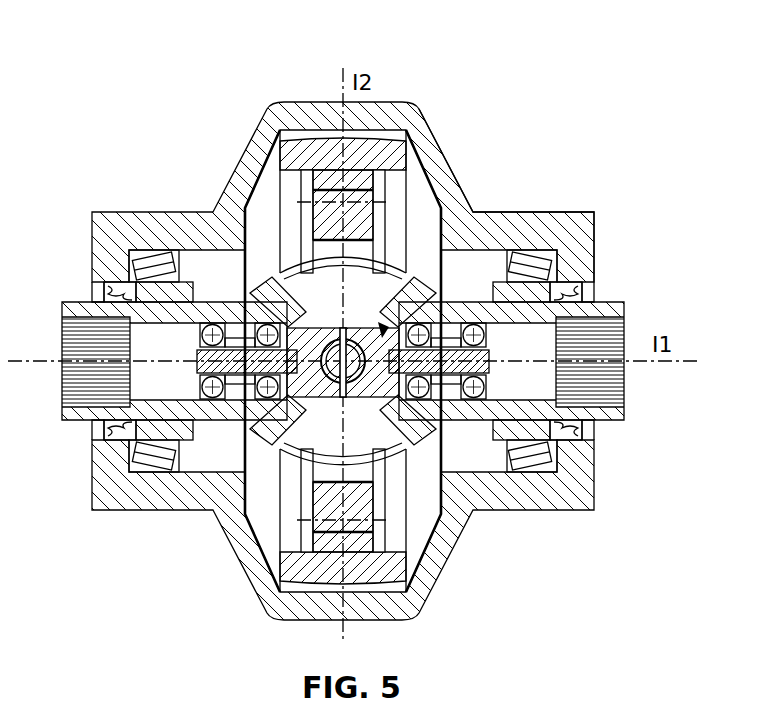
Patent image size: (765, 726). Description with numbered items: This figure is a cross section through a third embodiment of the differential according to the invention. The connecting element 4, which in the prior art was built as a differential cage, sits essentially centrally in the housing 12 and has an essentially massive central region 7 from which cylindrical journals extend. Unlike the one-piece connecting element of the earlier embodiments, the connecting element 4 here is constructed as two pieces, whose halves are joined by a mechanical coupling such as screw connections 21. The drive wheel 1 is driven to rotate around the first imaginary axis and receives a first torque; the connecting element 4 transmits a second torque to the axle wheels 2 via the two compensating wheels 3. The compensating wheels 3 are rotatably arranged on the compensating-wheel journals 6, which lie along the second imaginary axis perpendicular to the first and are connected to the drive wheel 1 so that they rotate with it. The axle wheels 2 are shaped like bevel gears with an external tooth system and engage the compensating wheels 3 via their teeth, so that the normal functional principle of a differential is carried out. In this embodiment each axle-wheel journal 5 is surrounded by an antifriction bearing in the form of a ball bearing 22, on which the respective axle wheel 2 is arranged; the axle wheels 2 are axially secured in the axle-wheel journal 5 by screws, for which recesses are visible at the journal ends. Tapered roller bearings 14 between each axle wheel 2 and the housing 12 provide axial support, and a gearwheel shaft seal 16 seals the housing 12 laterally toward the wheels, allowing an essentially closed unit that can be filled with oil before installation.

The drive wheel 1 is at (427, 115).
The housing 12 is at (466, 214).
The axle wheel 2 is at (386, 361).
The screw connection 21 is at (283, 292).
The compensating wheel 3 is at (284, 439).
The central region 7 is at (407, 439).
The connecting element 4 is at (392, 323).
The compensating-wheel journal 6 is at (348, 358).
The axle-wheel journal 5 is at (426, 398).
The ball bearing 22 is at (214, 333).
The tapered roller bearing 14 is at (151, 272).
The gearwheel shaft seal 16 is at (110, 290).